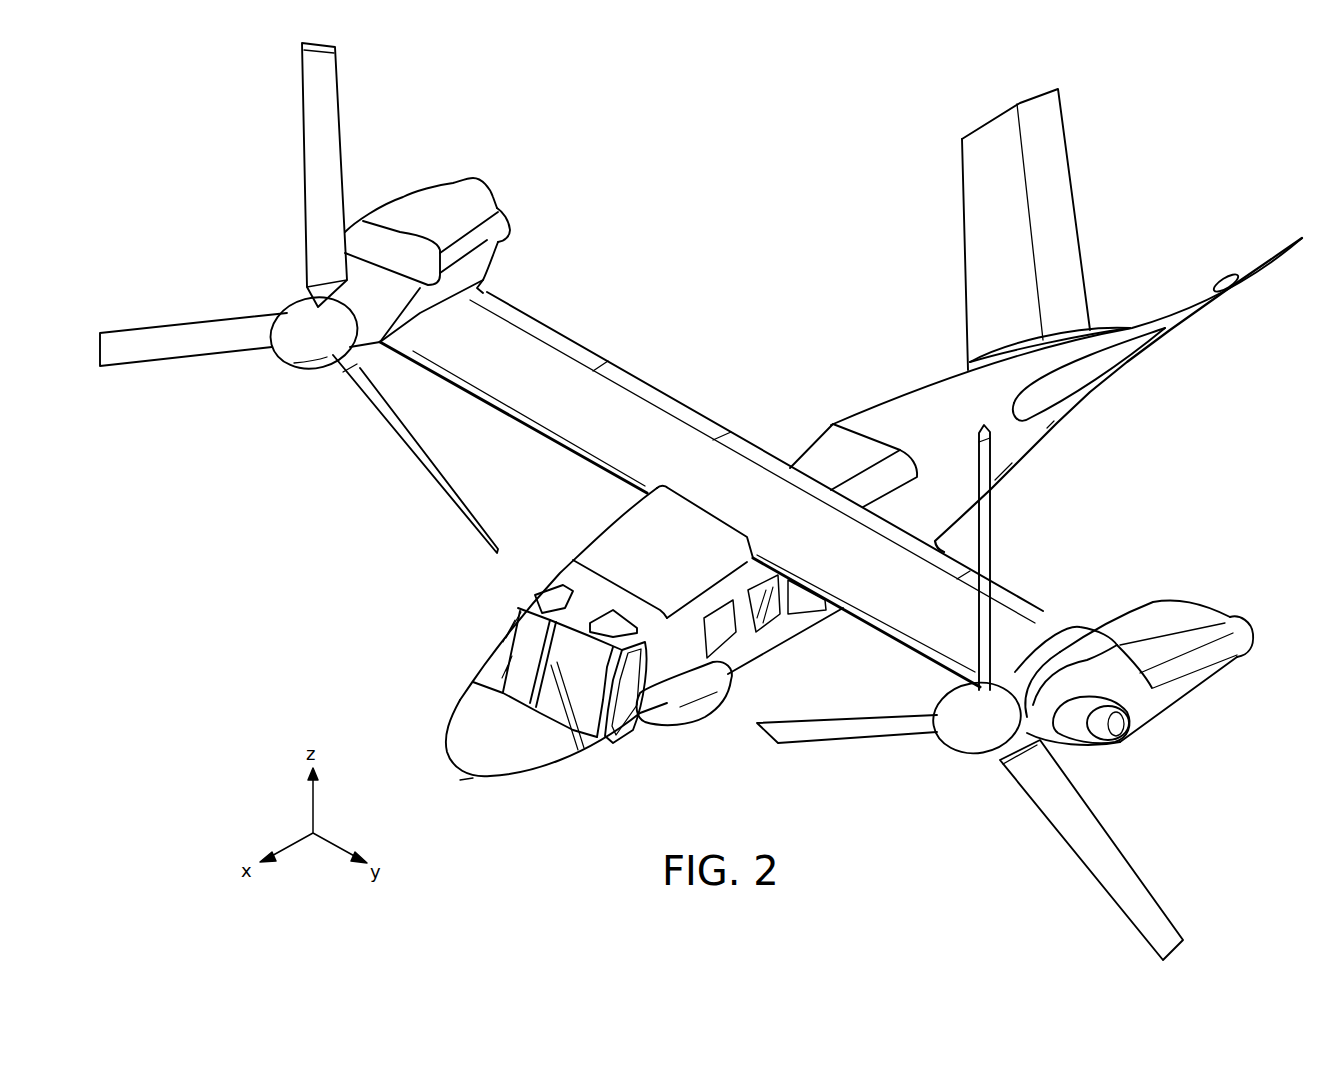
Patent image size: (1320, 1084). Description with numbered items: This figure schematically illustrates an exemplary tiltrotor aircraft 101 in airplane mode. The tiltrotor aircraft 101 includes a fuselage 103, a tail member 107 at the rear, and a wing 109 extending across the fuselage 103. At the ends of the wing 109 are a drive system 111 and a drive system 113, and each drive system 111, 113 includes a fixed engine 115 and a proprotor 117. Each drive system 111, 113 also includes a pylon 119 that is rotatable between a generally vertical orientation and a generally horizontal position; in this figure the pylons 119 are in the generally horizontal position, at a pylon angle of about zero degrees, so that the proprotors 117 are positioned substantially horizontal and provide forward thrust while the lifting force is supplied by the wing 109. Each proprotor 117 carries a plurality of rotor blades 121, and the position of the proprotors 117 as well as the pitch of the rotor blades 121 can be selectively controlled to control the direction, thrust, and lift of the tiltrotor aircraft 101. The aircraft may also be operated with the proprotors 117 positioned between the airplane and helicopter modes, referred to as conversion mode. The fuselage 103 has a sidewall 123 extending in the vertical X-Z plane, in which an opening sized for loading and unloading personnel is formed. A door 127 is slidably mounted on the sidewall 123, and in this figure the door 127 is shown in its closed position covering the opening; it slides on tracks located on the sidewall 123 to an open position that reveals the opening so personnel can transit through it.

The tiltrotor aircraft 101 is at (1184, 103).
The fuselage 103 is at (522, 780).
The tail member 107 is at (1073, 188).
The wing 109 is at (587, 462).
The drive system 111 is at (1157, 773).
The drive system 113 is at (298, 417).
The fixed engine 115 is at (1190, 710).
The proprotor 117 is at (277, 363).
The pylon 119 is at (1043, 636).
The rotor blades 121 is at (300, 125).
The sidewall 123 is at (683, 632).
The door 127 is at (795, 622).